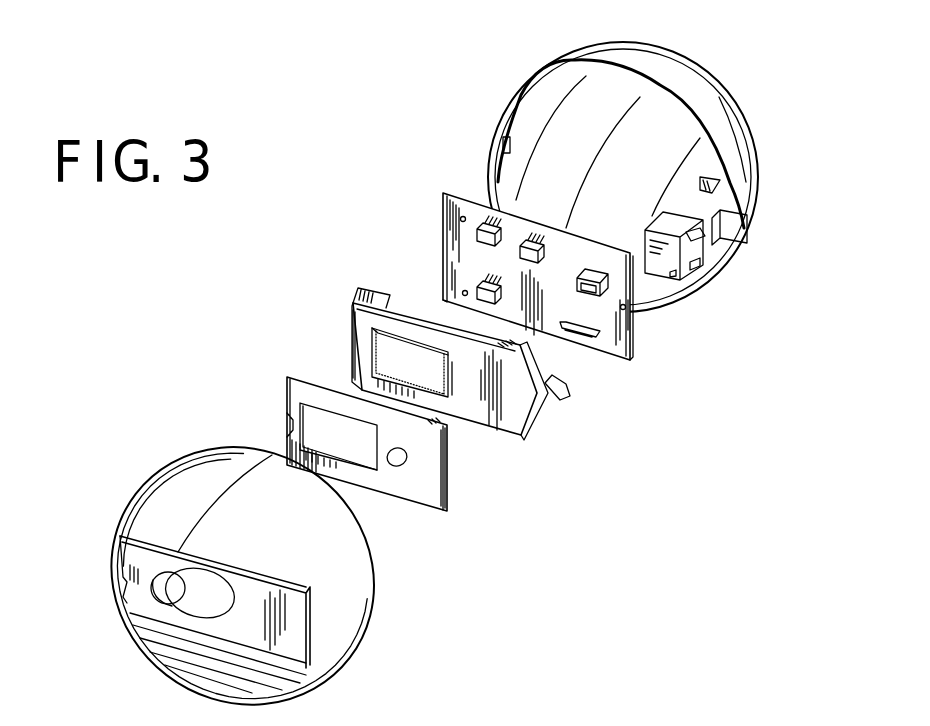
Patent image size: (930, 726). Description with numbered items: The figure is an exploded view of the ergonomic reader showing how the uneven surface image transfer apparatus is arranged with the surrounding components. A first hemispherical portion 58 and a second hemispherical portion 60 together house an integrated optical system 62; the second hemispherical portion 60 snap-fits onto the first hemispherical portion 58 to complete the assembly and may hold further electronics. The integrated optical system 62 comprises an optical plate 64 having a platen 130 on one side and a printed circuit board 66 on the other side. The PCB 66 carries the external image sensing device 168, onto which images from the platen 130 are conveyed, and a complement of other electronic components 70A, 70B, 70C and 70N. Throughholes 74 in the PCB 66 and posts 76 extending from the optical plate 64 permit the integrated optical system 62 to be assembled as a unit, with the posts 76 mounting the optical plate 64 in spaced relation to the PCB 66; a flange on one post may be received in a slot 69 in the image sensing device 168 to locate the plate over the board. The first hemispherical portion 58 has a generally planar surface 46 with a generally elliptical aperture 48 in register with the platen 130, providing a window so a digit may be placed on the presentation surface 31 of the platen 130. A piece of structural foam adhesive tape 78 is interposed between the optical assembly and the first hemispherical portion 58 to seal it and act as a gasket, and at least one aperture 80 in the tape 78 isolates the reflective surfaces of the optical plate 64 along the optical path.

The second hemispherical portion 60 is at (660, 67).
The integrated optical system 62 is at (334, 313).
The electronic component 70B is at (483, 228).
The electronic component 70N is at (533, 243).
The electronic component 70A is at (490, 297).
The electronic component 70C is at (593, 325).
The external image sensing device 168 is at (593, 270).
The slot 69 is at (640, 280).
The throughholes 74 is at (461, 221).
The printed circuit board (PCB) 66 is at (622, 337).
The optical plate 64 is at (434, 370).
The presentation surface 31 is at (385, 356).
The platen 130 is at (453, 382).
The posts 76 is at (380, 292).
The structural foam adhesive tape 78 is at (389, 473).
The aperture 80 is at (403, 465).
The first hemispherical portion 58 is at (240, 560).
The generally planar surface 46 is at (267, 602).
The aperture 48 is at (153, 583).